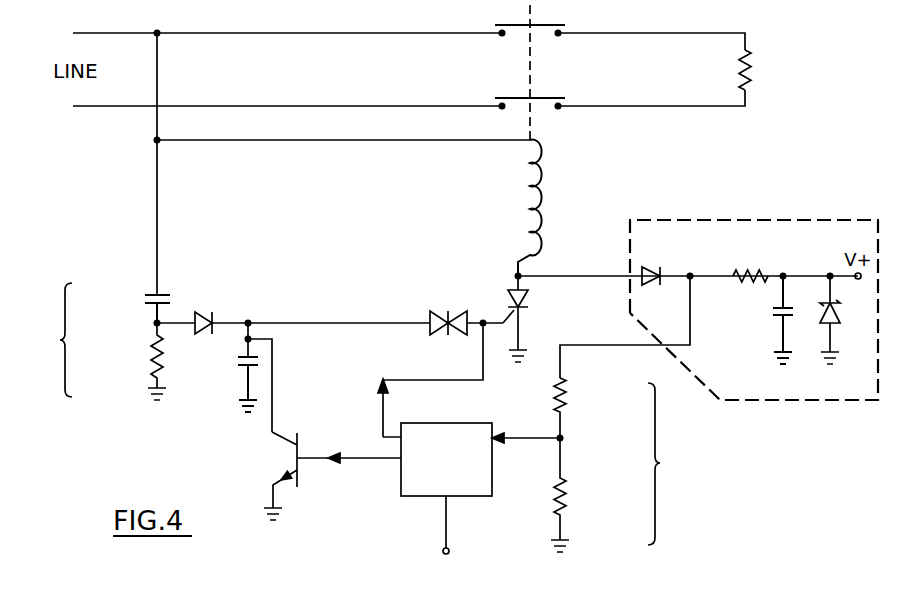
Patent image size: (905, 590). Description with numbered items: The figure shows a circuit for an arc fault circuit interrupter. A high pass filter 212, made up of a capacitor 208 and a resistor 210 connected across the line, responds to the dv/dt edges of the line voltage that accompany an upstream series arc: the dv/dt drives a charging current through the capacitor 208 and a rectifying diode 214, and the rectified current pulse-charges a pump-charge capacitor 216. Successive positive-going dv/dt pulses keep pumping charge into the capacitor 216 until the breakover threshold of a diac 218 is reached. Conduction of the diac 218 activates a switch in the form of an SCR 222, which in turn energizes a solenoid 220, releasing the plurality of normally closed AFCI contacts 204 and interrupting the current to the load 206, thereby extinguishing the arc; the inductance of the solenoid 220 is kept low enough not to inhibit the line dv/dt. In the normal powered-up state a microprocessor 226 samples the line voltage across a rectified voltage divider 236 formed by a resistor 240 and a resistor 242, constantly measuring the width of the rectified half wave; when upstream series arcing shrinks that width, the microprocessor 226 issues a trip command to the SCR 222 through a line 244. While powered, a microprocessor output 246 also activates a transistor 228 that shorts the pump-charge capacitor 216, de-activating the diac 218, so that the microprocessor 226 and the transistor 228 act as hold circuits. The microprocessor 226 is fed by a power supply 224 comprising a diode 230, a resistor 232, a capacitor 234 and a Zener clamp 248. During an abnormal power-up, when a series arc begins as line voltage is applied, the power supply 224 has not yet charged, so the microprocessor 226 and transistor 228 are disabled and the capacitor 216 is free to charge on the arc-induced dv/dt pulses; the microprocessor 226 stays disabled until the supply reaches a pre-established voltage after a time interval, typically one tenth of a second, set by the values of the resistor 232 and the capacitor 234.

The normally closed AFCI contacts 204 is at (553, 95).
The load 206 is at (740, 64).
The capacitor 208 is at (150, 312).
The resistor 210 is at (150, 362).
The high pass filter 212 is at (43, 340).
The rectifying diode 214 is at (200, 313).
The pump-charge capacitor 216 is at (240, 362).
The diac 218 is at (460, 314).
The solenoid 220 is at (540, 210).
The SCR 222 is at (532, 302).
The power supply 224 is at (720, 218).
The microprocessor 226 is at (425, 423).
The transistor 228 is at (299, 483).
The diode 230 is at (648, 270).
The resistor 232 is at (758, 284).
The capacitor 234 is at (775, 312).
The rectified voltage divider 236 is at (677, 464).
The resistor 240 is at (568, 396).
The resistor 242 is at (568, 496).
The line 244 is at (387, 380).
The microprocessor output 246 is at (313, 457).
The Zener clamp 248 is at (822, 303).